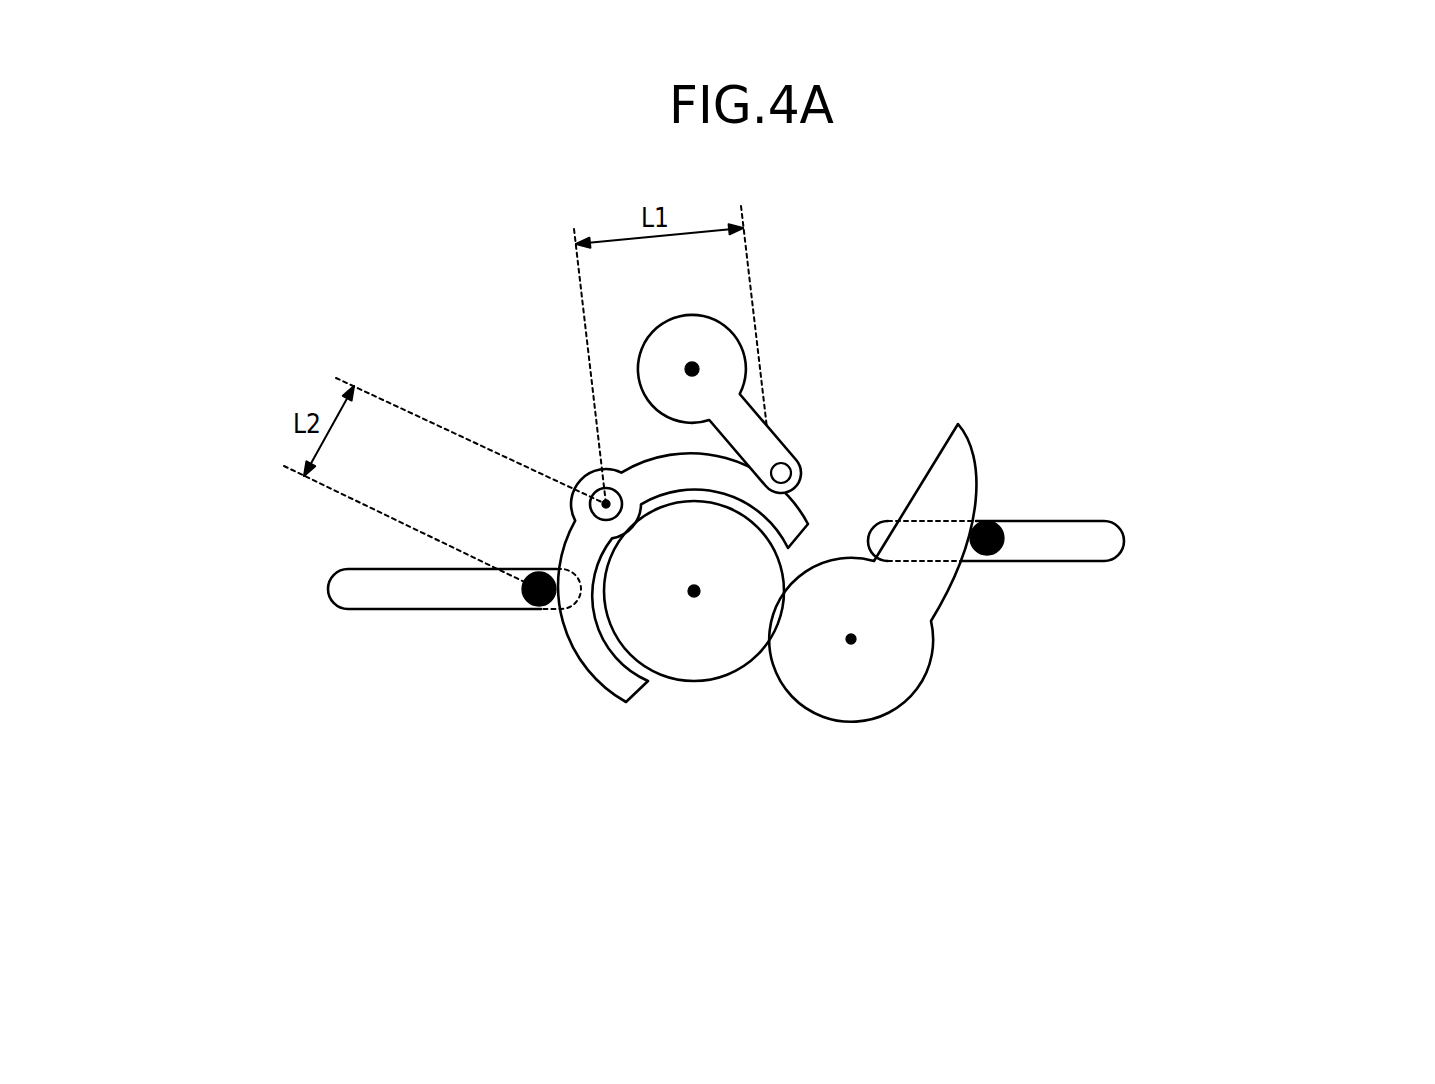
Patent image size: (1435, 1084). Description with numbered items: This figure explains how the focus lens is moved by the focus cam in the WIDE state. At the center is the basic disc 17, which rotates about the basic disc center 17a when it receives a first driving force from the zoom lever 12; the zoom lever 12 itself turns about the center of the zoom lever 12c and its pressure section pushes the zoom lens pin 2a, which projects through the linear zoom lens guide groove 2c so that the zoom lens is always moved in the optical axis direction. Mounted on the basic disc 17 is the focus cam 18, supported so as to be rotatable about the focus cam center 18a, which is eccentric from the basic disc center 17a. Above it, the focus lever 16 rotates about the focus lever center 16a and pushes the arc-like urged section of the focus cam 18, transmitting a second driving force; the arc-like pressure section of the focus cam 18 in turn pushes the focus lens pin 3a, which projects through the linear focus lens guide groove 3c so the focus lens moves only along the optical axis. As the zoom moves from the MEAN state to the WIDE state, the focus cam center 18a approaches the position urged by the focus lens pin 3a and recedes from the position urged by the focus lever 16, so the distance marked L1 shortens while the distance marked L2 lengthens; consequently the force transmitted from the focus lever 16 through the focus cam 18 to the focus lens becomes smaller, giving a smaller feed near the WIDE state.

The focus lever 16 is at (717, 325).
The focus lever center 16a is at (692, 368).
The zoom lever 12 is at (980, 432).
The zoom lens pin 2a is at (1000, 531).
The zoom lens guide groove 2c is at (1075, 521).
The center of the zoom lever 12c is at (850, 638).
The focus cam center 18a is at (603, 500).
The focus cam 18 is at (582, 503).
The focus lens guide groove 3c is at (367, 612).
The focus lens pin 3a is at (533, 610).
The basic disc 17 is at (695, 665).
The basic disc center 17a is at (693, 590).